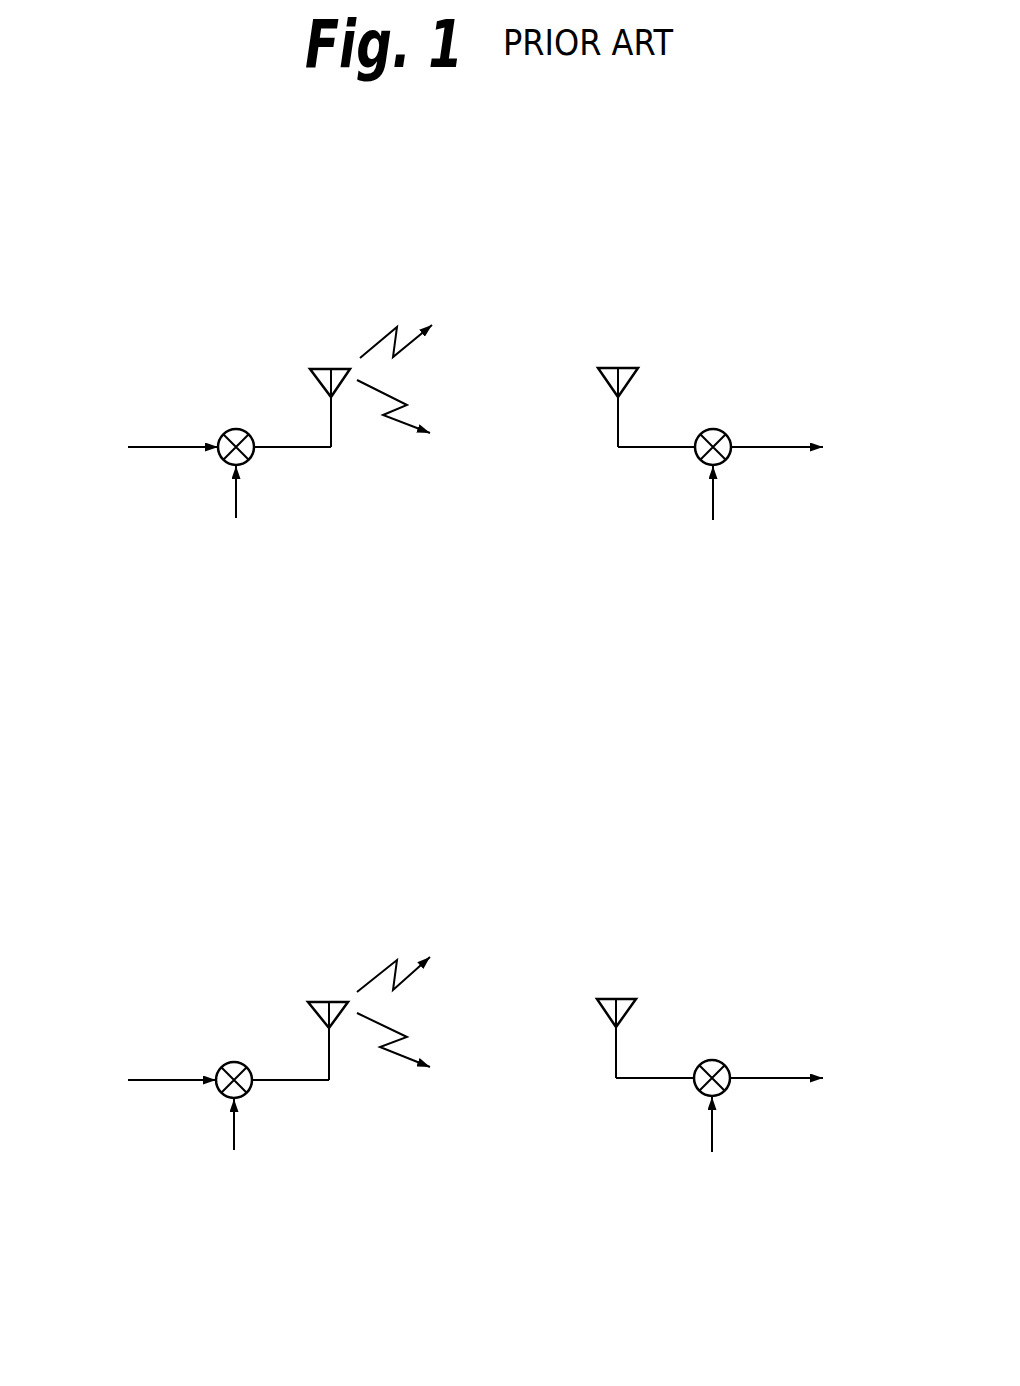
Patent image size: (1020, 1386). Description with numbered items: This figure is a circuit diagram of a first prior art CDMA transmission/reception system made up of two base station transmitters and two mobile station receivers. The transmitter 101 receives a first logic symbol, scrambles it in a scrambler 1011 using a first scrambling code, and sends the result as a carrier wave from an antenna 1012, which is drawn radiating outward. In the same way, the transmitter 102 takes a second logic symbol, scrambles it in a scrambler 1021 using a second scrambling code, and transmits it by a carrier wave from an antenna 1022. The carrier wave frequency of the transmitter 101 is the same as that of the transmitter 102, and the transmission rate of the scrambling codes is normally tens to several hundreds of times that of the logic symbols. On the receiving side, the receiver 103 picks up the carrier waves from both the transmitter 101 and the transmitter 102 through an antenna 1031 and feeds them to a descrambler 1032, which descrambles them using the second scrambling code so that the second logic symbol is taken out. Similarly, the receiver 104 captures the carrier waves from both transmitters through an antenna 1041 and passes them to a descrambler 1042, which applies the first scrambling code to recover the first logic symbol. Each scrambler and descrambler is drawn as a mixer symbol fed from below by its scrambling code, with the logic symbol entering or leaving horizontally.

The transmitter 101 is at (347, 268).
The scrambler 1011 is at (236, 428).
The antenna 1012 is at (332, 413).
The transmitter 102 is at (348, 902).
The scrambler 1021 is at (234, 1061).
The antenna 1022 is at (330, 1045).
The receiver 103 is at (825, 268).
The antenna 1031 is at (610, 367).
The descrambler 1032 is at (713, 428).
The receiver 104 is at (770, 902).
The antenna 1041 is at (610, 998).
The descrambler 1042 is at (712, 1059).